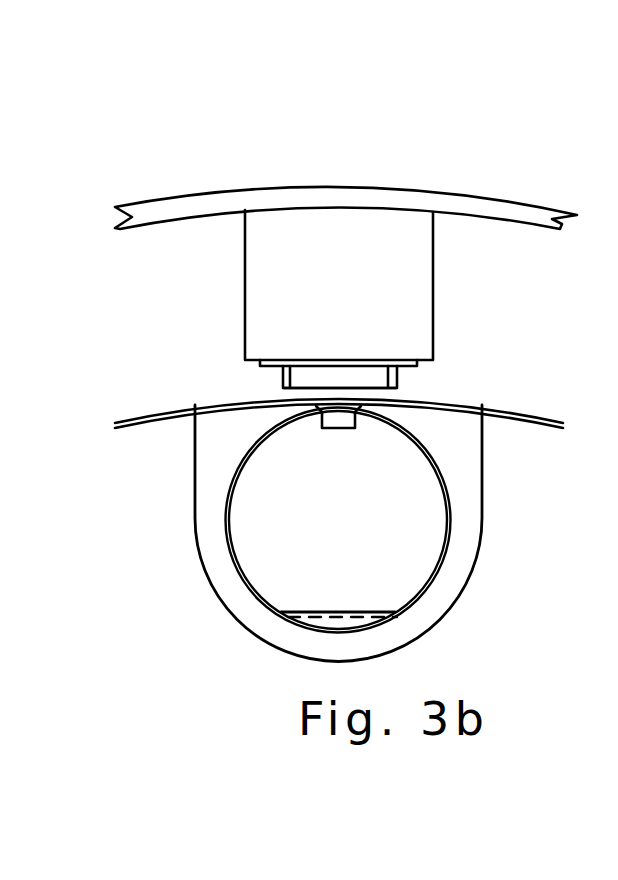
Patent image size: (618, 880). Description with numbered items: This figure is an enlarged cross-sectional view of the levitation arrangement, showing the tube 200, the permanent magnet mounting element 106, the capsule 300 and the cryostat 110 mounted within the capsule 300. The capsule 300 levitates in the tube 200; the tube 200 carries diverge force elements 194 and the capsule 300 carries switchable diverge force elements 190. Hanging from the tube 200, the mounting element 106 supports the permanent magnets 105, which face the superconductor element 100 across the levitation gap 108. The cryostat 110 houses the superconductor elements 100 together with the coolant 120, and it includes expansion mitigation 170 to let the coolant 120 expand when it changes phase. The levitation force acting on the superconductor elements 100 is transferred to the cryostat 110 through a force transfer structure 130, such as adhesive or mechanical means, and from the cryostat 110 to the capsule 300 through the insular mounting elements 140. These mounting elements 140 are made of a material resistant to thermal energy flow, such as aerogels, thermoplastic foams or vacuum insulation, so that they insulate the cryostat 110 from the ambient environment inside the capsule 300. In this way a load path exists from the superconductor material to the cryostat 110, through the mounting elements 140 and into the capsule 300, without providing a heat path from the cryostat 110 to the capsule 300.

The superconductor element 100 is at (293, 398).
The permanent magnets 105 is at (332, 378).
The mounting element 106 is at (347, 332).
The levitation gap 108 is at (338, 393).
The cryostat 110 is at (228, 548).
The coolant 120 is at (410, 541).
The force transfer structure 130 is at (360, 412).
The insular mounting elements 140 is at (230, 465).
The expansion mitigation 170 is at (347, 623).
The switchable diverge force elements 190 is at (0, 230).
The diverge force elements 194 is at (0, 402).
The tube 200 is at (122, 113).
The capsule 300 is at (140, 427).